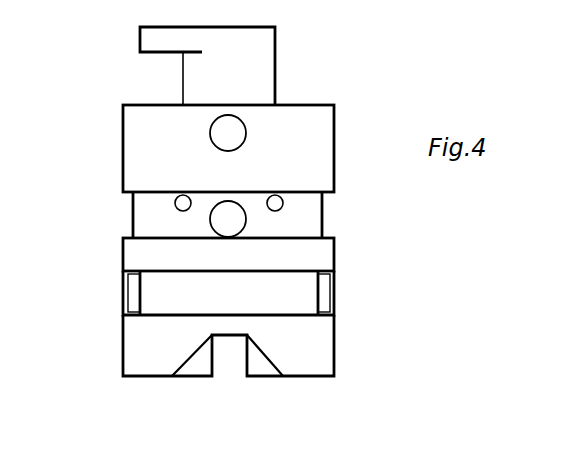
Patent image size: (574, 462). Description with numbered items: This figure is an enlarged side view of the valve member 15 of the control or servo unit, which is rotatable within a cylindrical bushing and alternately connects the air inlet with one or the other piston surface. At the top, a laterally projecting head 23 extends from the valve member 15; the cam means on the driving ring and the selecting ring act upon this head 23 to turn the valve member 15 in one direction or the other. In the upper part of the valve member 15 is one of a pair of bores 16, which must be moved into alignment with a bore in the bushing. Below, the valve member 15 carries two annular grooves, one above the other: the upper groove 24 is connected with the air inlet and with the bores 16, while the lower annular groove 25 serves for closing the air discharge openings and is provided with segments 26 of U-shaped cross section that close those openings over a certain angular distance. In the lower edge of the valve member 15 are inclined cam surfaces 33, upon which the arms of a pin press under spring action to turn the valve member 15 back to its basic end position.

The valve member 15 is at (123, 150).
The bore 16 is at (232, 131).
The laterally projecting head 23 is at (166, 41).
The upper annular groove 24 is at (323, 210).
The lower annular groove 25 is at (285, 293).
The segments 26 is at (134, 297).
The inclined cam surfaces 33 is at (198, 348).